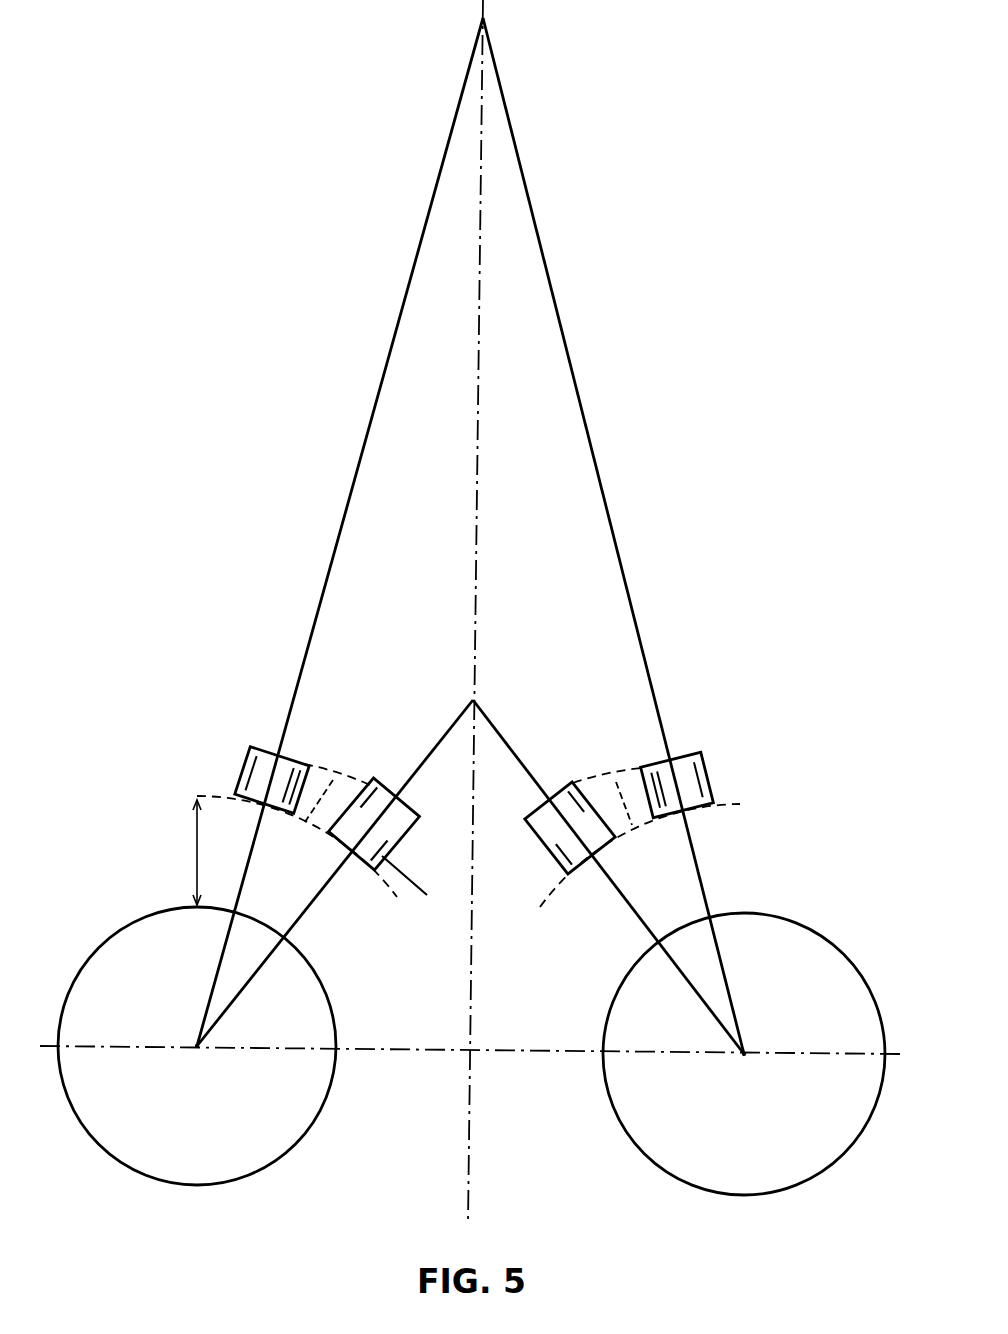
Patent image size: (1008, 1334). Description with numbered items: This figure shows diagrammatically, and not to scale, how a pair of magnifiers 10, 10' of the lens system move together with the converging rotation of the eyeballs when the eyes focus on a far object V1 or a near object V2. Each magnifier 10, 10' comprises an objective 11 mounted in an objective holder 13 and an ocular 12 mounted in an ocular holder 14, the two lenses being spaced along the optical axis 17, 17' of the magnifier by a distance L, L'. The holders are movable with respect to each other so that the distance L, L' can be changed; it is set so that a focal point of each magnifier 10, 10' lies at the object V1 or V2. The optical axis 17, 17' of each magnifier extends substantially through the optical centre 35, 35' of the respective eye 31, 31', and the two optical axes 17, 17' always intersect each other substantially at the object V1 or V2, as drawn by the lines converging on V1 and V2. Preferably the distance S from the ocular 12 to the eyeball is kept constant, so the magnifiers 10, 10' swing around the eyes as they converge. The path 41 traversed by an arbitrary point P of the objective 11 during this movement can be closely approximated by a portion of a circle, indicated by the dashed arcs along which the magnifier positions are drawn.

The magnifier 10 is at (222, 748).
The magnifier 10' is at (731, 757).
The objective 11 is at (405, 805).
The ocular 12 is at (360, 850).
The objective holder 13 is at (413, 828).
The ocular holder 14 is at (419, 890).
The optical axis 17 is at (340, 532).
The optical axis 17' is at (608, 536).
The eye 31 is at (209, 1053).
The eye 31' is at (730, 1057).
The optical centre 35 is at (217, 1068).
The optical centre 35' is at (718, 1076).
The path 41 is at (330, 777).
The object V1 is at (516, 32).
The object V2 is at (498, 692).
The distance S is at (189, 852).
The distance L is at (330, 817).
The distance L' is at (615, 824).
The point P is at (330, 757).